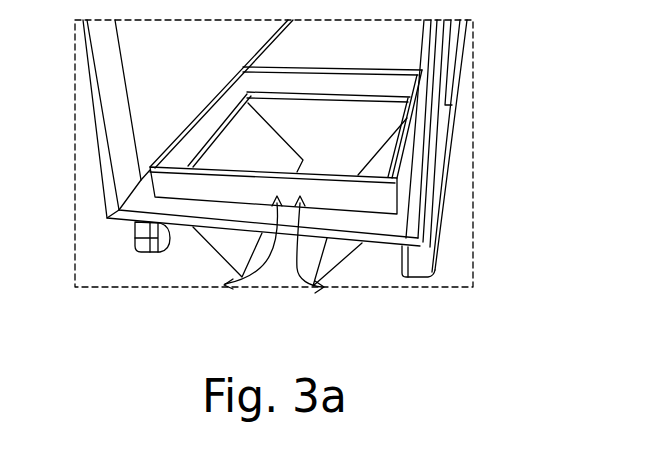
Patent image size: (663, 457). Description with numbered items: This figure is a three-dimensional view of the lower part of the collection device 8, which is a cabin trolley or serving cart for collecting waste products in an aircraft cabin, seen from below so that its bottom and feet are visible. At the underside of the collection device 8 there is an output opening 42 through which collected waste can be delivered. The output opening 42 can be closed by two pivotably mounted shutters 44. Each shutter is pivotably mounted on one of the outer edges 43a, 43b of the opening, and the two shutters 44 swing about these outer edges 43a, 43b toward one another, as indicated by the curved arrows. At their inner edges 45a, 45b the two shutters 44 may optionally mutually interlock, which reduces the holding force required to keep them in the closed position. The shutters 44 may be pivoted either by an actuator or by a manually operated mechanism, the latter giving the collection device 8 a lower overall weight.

The collection device 8 is at (112, 108).
The output opening 42 is at (335, 131).
The outer edge 43a is at (223, 126).
The outer edge 43b is at (410, 126).
The shutters 44 is at (263, 147).
The inner edge 45a is at (245, 274).
The inner edge 45b is at (326, 266).